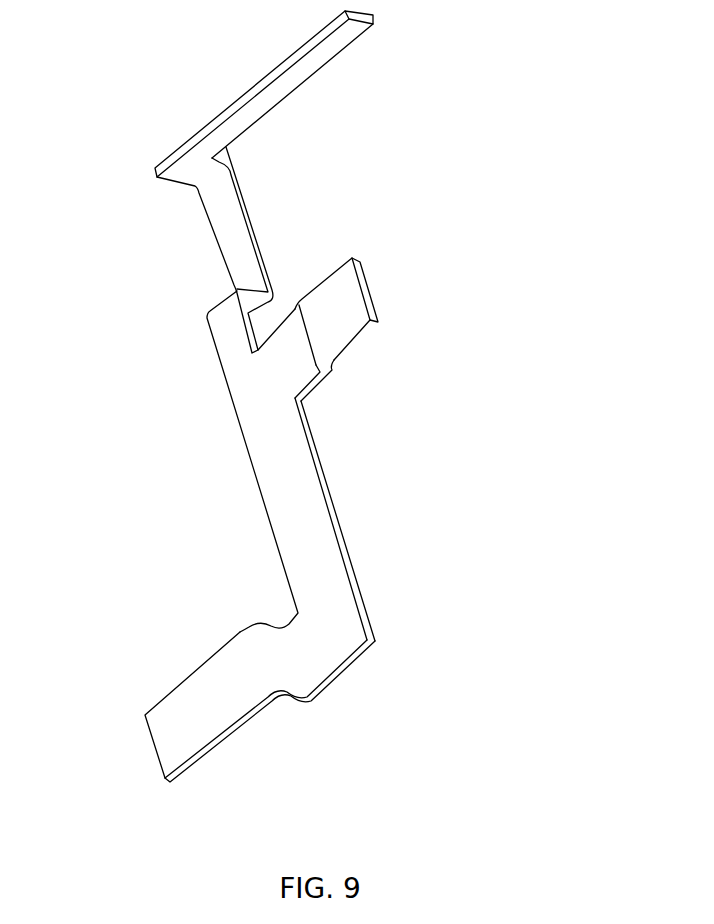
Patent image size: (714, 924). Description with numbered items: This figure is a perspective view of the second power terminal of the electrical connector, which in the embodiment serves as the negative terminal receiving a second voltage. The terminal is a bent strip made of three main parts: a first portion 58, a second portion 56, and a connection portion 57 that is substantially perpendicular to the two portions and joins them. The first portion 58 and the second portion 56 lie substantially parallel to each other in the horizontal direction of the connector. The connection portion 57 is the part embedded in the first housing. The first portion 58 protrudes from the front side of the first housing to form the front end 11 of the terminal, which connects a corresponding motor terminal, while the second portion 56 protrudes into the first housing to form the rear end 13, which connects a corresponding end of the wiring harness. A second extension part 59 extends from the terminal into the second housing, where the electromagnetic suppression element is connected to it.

The front end 11 is at (244, 396).
The rear end 13 is at (353, 305).
The second portion 56 is at (302, 378).
The connection portion 57 is at (282, 467).
The first portion 58 is at (247, 693).
The second extension part 59 is at (303, 68).